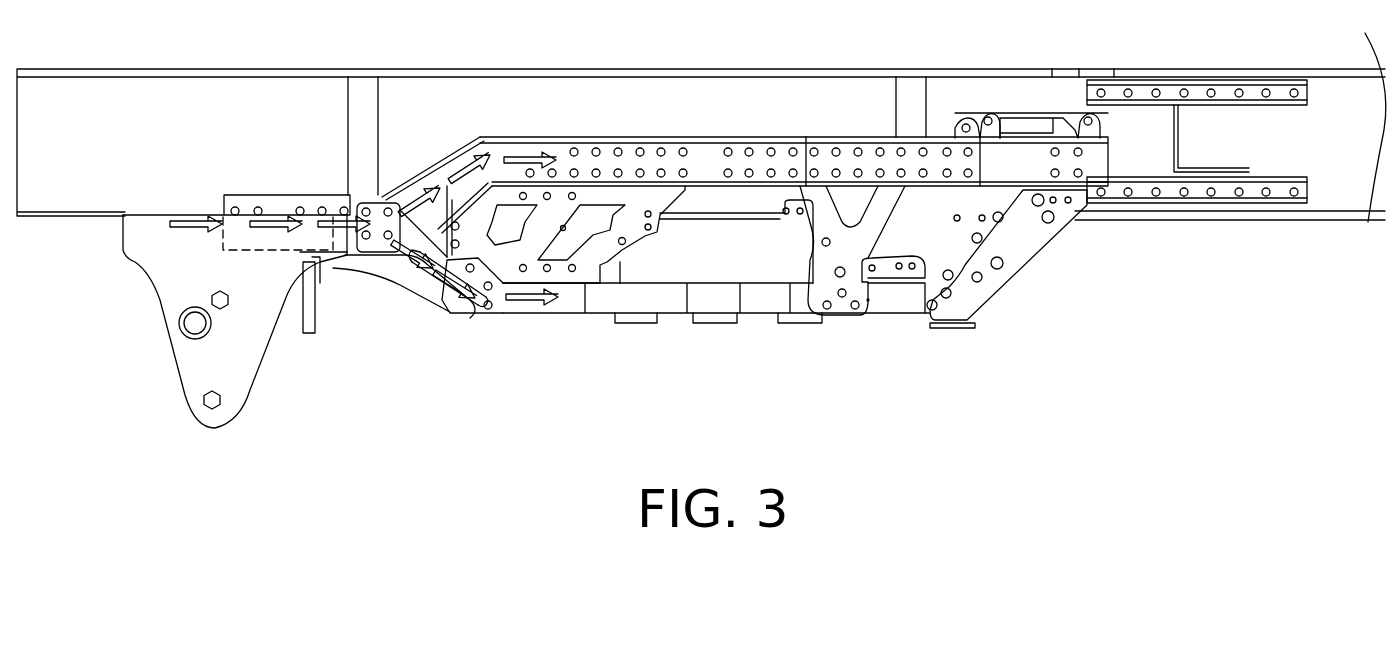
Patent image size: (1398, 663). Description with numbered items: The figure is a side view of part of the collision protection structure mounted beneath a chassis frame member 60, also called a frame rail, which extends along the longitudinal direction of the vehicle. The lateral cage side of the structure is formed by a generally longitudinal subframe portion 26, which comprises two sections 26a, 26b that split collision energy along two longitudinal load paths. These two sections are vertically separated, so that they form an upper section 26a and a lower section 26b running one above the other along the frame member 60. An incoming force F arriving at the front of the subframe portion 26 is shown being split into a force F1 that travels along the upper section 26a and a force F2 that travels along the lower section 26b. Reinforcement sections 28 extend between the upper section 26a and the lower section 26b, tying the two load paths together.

The frame member 60 is at (433, 107).
The incoming force F is at (197, 232).
The force along the upper section F1 is at (518, 150).
The force along the lower section F2 is at (523, 300).
The longitudinal subframe portion 26 is at (1058, 277).
The upper section 26a is at (706, 163).
The lower section 26b is at (673, 297).
The reinforcement section 28 is at (617, 257).